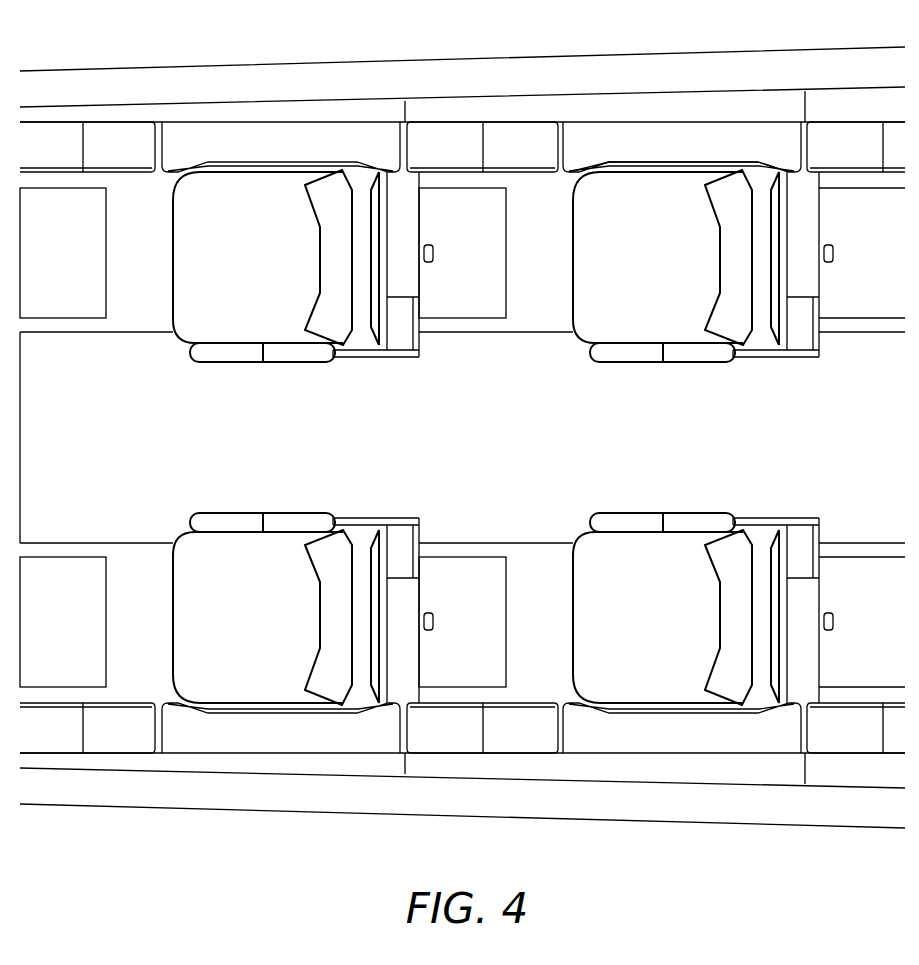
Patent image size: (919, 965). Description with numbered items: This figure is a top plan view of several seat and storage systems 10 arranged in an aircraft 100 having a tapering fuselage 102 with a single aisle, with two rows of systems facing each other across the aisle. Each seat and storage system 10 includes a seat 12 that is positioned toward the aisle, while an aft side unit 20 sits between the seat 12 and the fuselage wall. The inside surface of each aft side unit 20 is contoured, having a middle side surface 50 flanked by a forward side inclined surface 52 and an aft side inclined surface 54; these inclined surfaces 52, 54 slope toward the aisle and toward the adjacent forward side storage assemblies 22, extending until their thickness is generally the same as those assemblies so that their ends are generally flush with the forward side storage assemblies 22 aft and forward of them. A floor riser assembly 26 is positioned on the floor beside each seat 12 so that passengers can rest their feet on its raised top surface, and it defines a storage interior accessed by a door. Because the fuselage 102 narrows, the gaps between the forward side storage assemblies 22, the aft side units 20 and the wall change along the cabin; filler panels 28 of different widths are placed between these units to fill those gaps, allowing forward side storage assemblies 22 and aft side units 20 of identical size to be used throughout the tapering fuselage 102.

The seat and storage system 10 is at (370, 385).
The seat 12 is at (203, 313).
The aft side unit 20 is at (255, 135).
The forward side storage assembly 22 is at (63, 135).
The floor riser assembly 26 is at (122, 322).
The filler panels 28 is at (152, 113).
The middle side surface 50 is at (692, 172).
The forward side inclined surface 52 is at (595, 172).
The aft side inclined surface 54 is at (790, 172).
The aircraft 100 is at (395, 797).
The tapering fuselage 102 is at (393, 78).